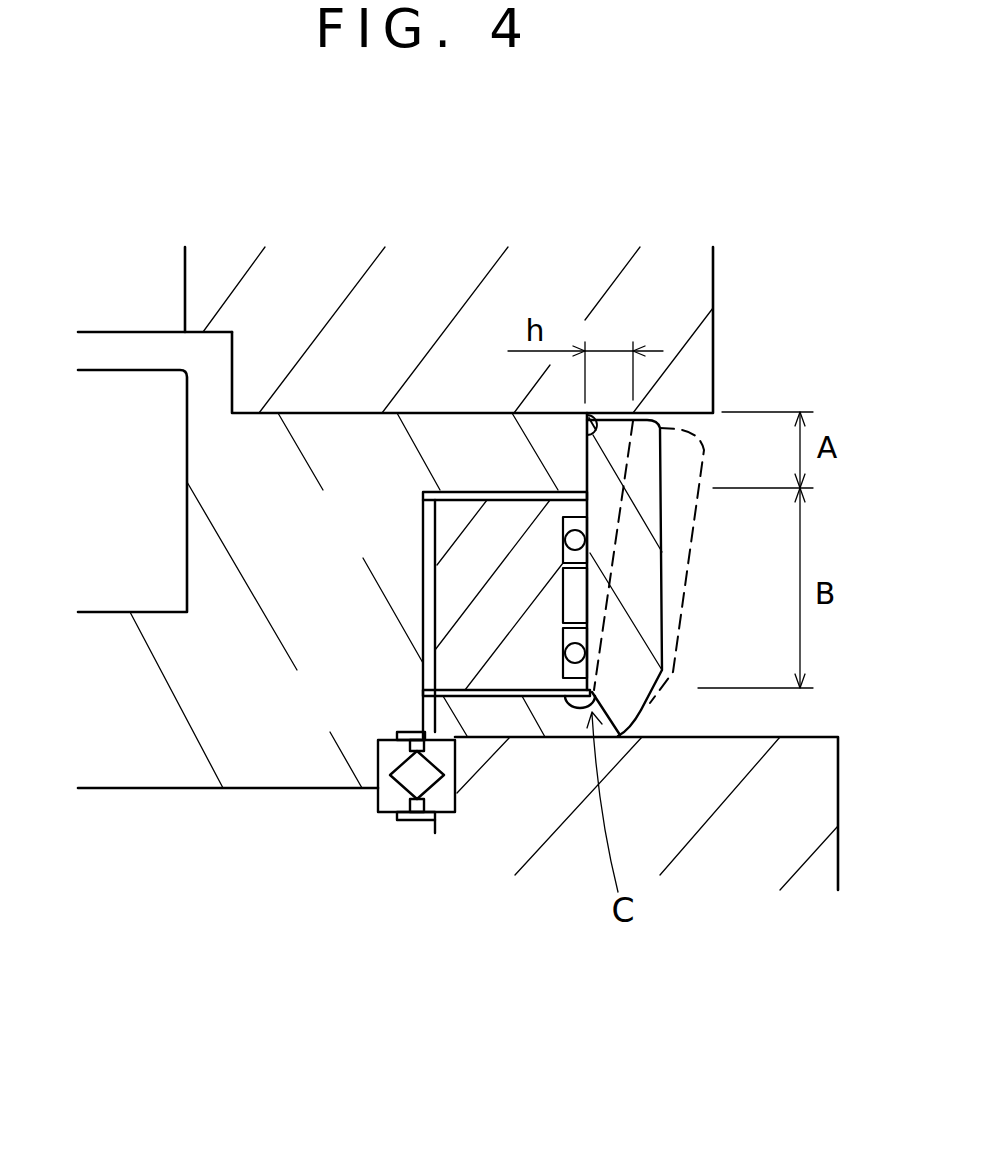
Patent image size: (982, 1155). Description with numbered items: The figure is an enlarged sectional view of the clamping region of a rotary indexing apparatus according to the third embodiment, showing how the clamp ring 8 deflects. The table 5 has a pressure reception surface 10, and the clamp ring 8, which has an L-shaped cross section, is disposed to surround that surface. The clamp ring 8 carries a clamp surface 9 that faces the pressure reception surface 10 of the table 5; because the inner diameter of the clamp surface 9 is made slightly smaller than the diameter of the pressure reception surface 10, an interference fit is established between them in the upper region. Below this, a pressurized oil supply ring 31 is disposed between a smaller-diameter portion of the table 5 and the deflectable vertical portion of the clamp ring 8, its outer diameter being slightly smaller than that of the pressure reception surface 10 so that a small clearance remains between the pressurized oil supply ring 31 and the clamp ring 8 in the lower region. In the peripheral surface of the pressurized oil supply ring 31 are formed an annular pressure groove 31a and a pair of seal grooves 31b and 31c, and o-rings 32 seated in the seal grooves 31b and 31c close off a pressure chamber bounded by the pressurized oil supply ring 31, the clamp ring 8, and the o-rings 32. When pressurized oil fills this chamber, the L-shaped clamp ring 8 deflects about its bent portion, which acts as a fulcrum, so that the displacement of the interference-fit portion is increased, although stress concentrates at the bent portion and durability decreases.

The table 5 is at (332, 453).
The clamp ring 8 is at (703, 452).
The clamp surface 9 is at (587, 460).
The pressure reception surface 10 is at (590, 407).
The pressurized oil supply ring 31 is at (470, 572).
The annular pressure groove 31a is at (577, 597).
The seal groove 31b is at (563, 525).
The seal groove 31c is at (563, 676).
The o-rings 32 is at (577, 545).